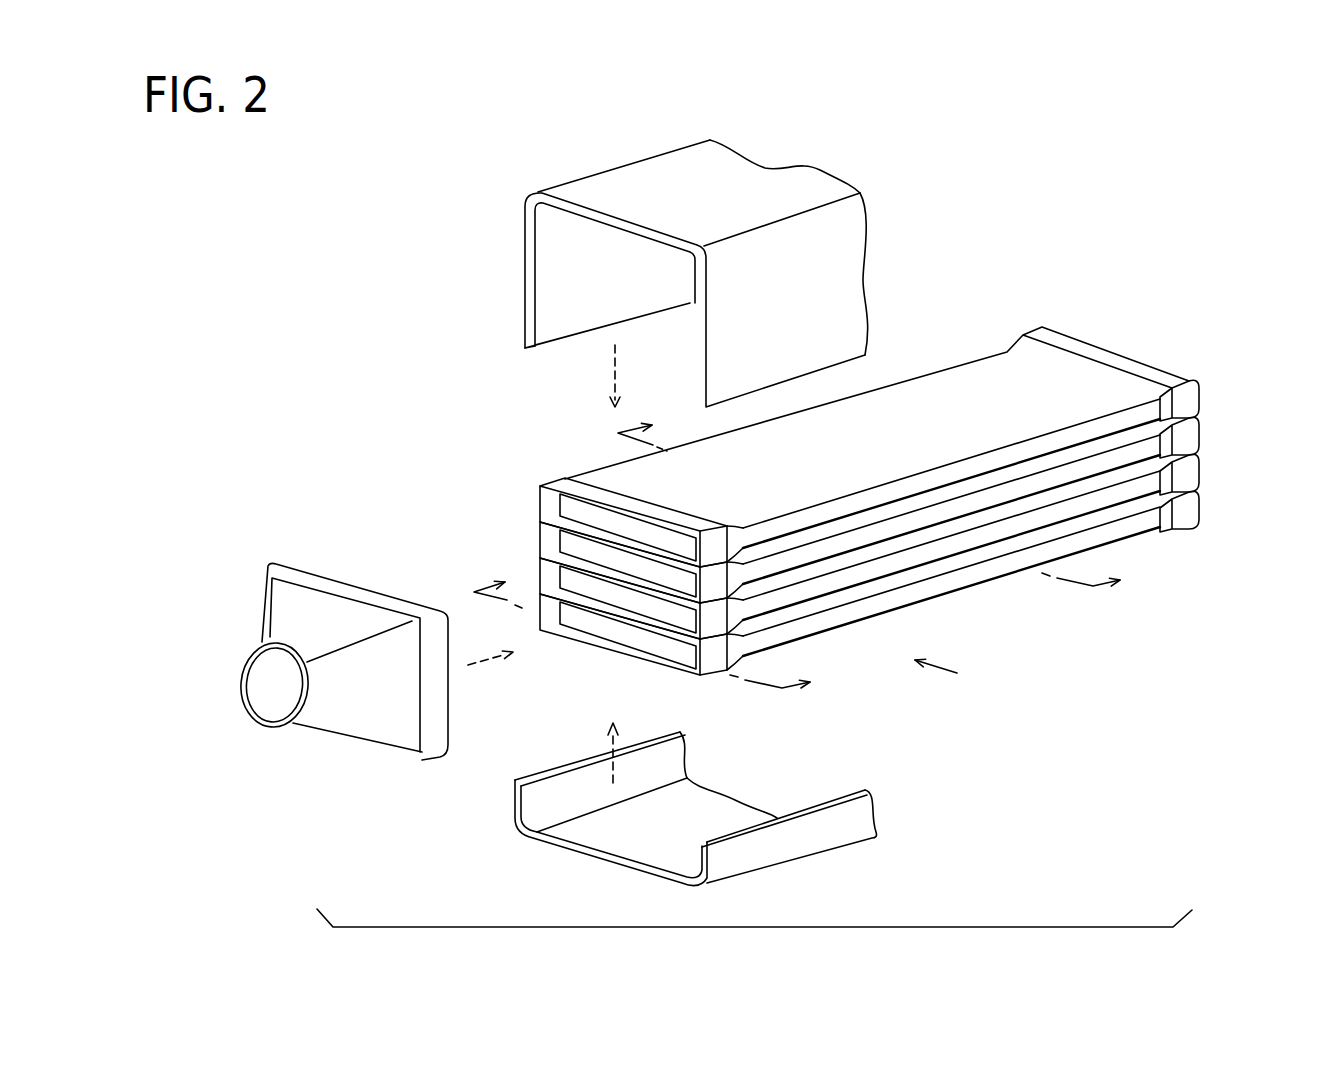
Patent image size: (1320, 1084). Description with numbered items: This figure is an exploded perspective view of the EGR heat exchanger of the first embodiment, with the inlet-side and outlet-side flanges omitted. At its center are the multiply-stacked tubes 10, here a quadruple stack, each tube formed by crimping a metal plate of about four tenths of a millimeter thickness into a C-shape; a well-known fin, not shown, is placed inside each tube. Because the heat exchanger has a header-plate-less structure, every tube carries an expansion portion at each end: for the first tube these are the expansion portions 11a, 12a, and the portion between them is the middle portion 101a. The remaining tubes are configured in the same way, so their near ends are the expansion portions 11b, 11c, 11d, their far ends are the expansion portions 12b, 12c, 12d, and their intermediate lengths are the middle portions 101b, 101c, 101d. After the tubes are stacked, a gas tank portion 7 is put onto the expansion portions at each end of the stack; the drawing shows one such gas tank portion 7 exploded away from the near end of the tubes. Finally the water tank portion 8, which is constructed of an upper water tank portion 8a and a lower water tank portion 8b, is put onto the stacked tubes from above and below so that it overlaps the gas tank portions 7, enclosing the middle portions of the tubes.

The gas tank portion 7 is at (375, 636).
The water tank portion 8 is at (694, 499).
The upper water tank portion 8a is at (696, 256).
The lower water tank portion 8b is at (696, 820).
The multiply-stacked tubes 10 is at (869, 485).
The expansion portion 11a is at (869, 440).
The expansion portion 11b is at (869, 472).
The expansion portion 11c is at (868, 546).
The expansion portion 11d is at (869, 583).
The middle portion 101a is at (959, 438).
The middle portion 101b is at (981, 469).
The middle portion 101c is at (987, 552).
The middle portion 101d is at (988, 588).
The expansion portion 12a is at (1218, 400).
The expansion portion 12b is at (1218, 435).
The expansion portion 12c is at (1217, 474).
The expansion portion 12d is at (1218, 511).